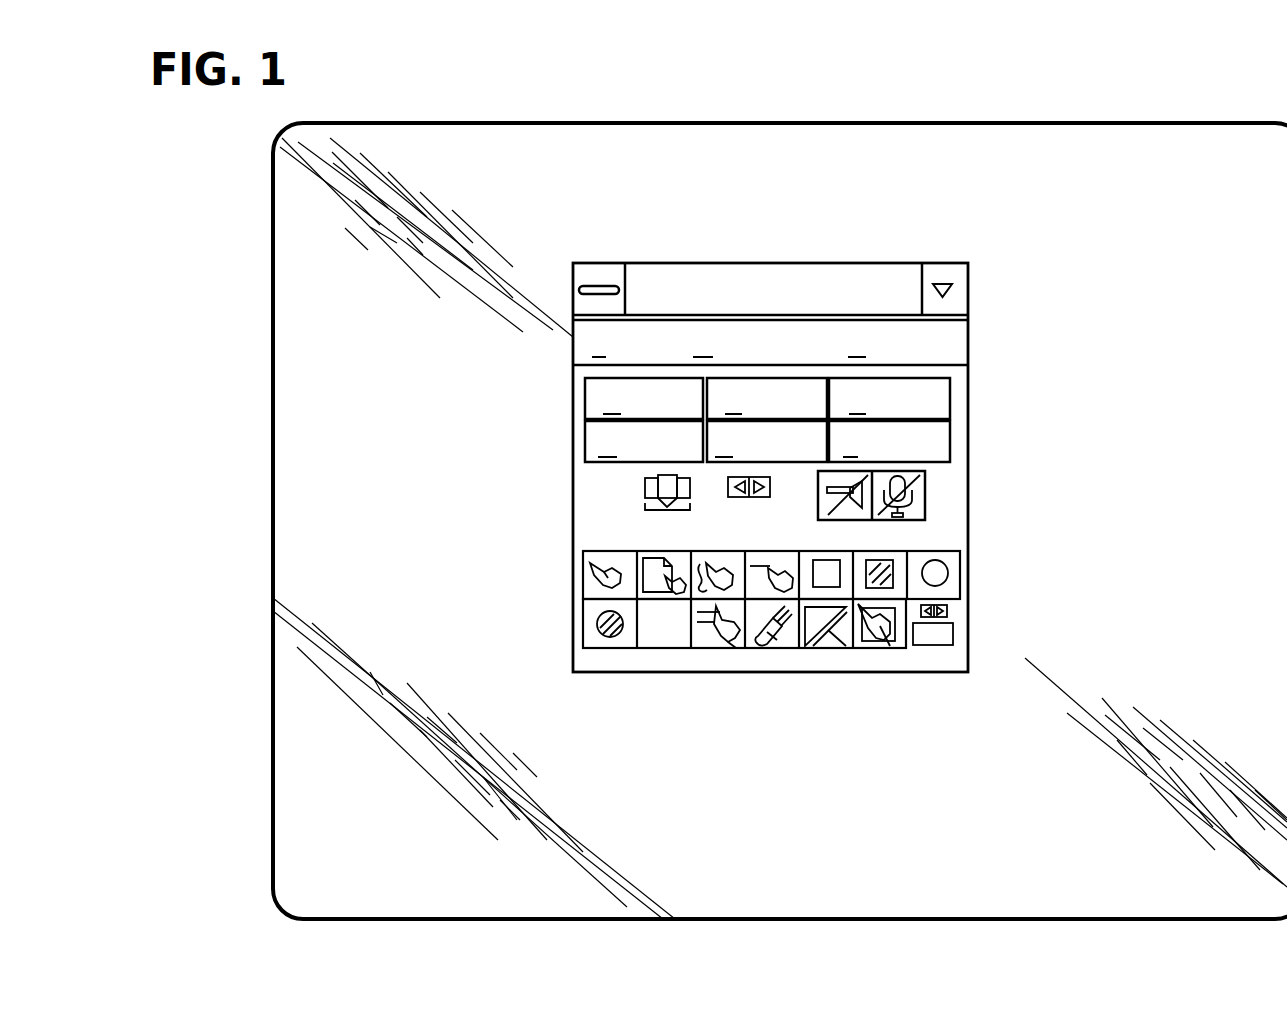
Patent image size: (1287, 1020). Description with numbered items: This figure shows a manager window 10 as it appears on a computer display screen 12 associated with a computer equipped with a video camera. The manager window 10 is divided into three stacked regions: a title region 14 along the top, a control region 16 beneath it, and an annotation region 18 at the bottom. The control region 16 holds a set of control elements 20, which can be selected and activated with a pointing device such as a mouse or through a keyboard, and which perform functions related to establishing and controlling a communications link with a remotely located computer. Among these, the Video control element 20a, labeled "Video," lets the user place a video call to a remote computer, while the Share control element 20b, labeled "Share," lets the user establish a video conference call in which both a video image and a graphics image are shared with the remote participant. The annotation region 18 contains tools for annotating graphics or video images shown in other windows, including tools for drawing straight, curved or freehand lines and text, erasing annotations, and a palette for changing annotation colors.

The manager window 10 is at (1042, 192).
The computer display screen 12 is at (795, 123).
The title region 14 is at (987, 263).
The control region 16 is at (987, 322).
The annotation region 18 is at (987, 548).
The control elements 20 is at (722, 464).
The Video control element 20a is at (592, 392).
The Share control element 20b is at (922, 385).